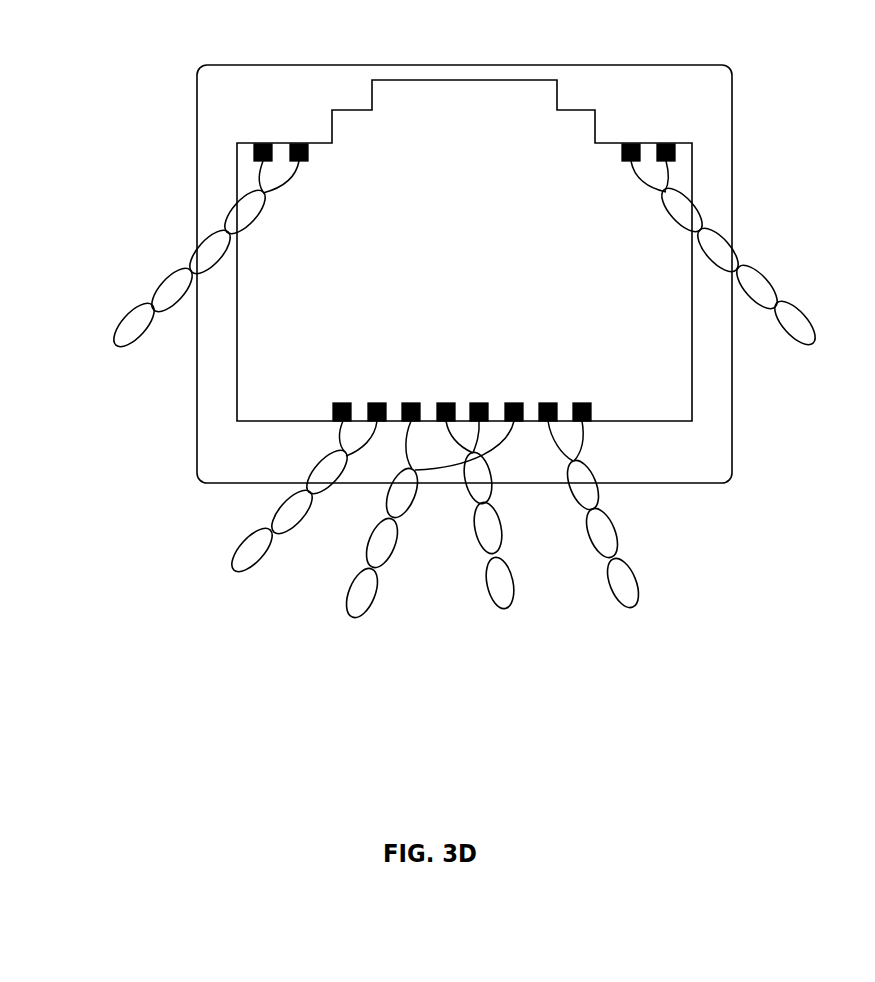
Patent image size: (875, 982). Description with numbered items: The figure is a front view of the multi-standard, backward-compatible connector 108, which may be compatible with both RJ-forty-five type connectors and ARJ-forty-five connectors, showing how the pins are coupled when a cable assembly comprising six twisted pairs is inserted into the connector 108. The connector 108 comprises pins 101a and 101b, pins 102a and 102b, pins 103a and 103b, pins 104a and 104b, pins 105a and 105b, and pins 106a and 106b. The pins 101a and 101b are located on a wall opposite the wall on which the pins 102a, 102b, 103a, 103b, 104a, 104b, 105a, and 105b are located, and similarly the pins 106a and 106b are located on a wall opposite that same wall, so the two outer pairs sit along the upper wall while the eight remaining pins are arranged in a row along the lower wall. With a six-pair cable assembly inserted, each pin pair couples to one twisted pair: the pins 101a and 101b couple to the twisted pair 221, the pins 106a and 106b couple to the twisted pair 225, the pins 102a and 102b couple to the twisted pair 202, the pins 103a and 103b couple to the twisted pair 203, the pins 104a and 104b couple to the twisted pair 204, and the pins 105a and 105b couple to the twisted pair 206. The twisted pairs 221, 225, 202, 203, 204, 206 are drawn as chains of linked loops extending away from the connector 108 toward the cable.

The connector 108 is at (249, 65).
The pin 101a is at (262, 144).
The pin 101b is at (298, 144).
The pin 102a is at (343, 403).
The pin 102b is at (378, 403).
The pin 103a is at (417, 403).
The pin 103b is at (513, 403).
The pin 104a is at (445, 403).
The pin 104b is at (481, 403).
The pin 105a is at (549, 403).
The pin 105b is at (583, 403).
The pin 106a is at (628, 144).
The pin 106b is at (678, 132).
The twisted wire pair 221 is at (118, 322).
The twisted wire pair 225 is at (806, 318).
The twisted wire pair 202 is at (240, 541).
The twisted wire pair 203 is at (350, 588).
The twisted wire pair 204 is at (513, 578).
The twisted wire pair 206 is at (616, 528).